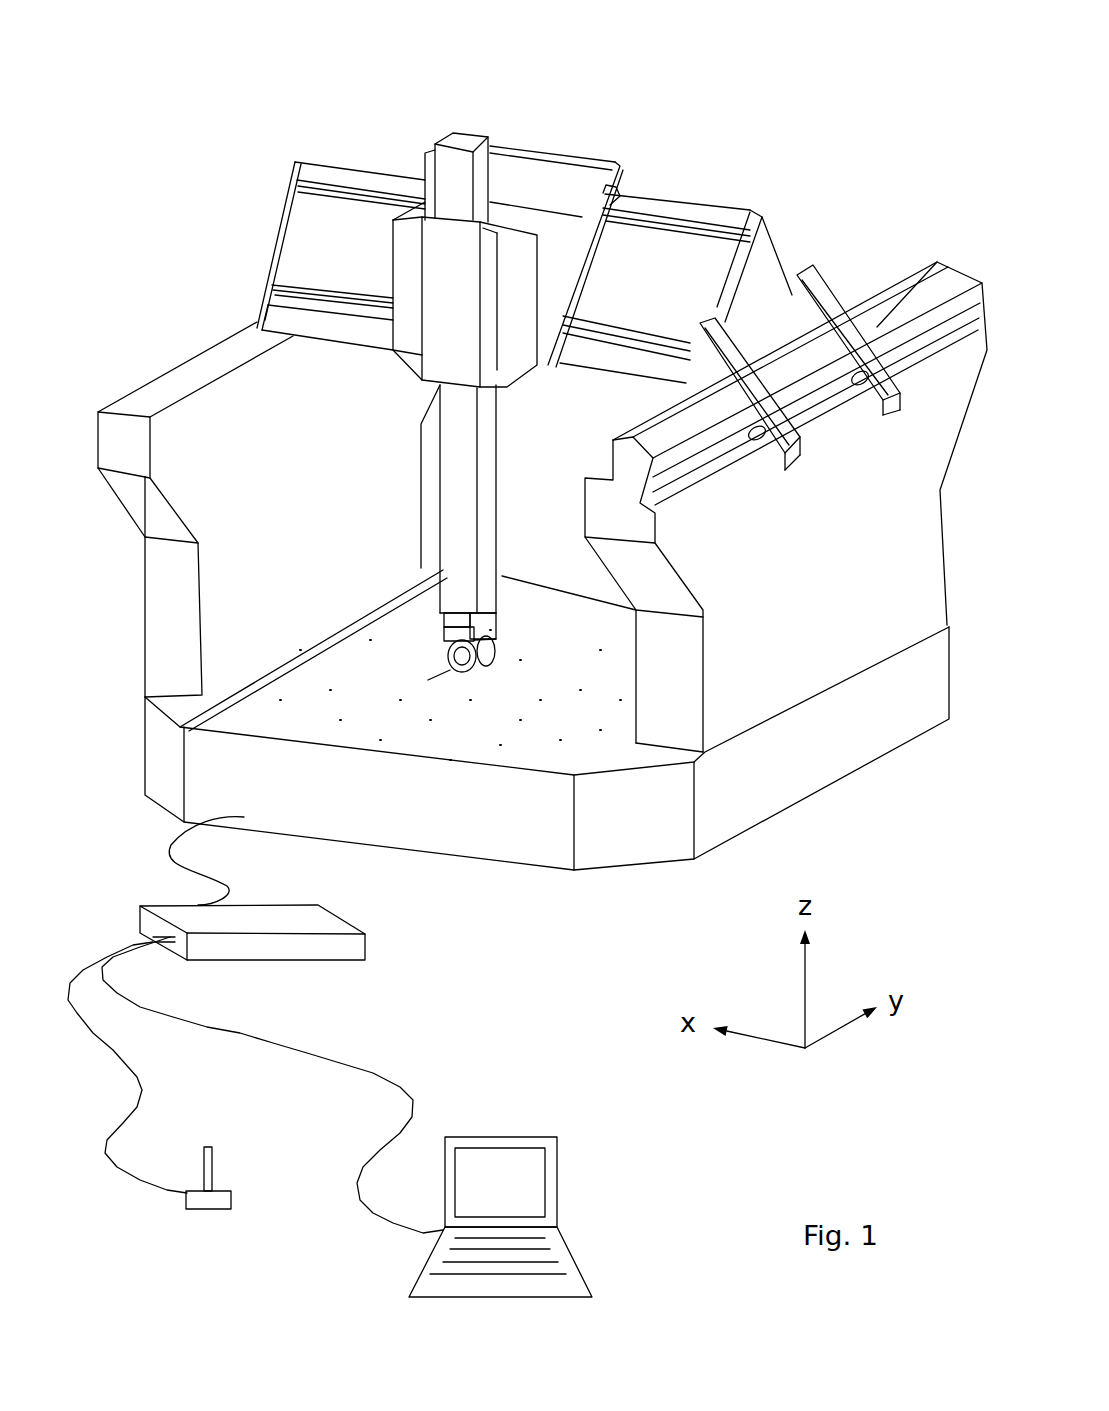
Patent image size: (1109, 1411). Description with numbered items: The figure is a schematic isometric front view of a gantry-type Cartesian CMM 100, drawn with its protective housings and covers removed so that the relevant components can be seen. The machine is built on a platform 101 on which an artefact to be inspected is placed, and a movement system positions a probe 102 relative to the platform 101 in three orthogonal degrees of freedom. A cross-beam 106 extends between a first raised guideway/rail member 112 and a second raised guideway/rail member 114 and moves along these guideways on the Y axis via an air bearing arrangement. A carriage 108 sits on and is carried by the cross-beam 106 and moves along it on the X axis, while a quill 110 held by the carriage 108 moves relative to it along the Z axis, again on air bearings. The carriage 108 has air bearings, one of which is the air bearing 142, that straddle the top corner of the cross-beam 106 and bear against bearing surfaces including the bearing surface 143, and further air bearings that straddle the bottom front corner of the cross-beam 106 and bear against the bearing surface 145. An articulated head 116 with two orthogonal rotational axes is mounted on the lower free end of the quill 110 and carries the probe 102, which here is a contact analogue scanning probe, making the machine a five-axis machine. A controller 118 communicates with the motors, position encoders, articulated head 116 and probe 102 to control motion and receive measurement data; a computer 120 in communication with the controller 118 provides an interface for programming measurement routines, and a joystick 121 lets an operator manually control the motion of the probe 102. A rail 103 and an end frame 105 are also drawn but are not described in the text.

The CMM 100 is at (838, 102).
The platform 101 is at (294, 824).
The probe 102 is at (442, 694).
The rail 103 is at (763, 280).
The bridge end frame 105 is at (273, 263).
The cross-beam 106 is at (258, 202).
The carriage 108 is at (548, 260).
The quill 110 is at (445, 568).
The first raised guideway/rail member 112 is at (942, 234).
The second raised guideway/rail member 114 is at (177, 345).
The articulated head 116 is at (435, 642).
The controller 118 is at (373, 980).
The computer 120 is at (580, 1153).
The joystick 121 is at (242, 1166).
The air bearing 142 is at (617, 193).
The second bearing surface 143 is at (328, 172).
The first bearing surface 145 is at (320, 323).